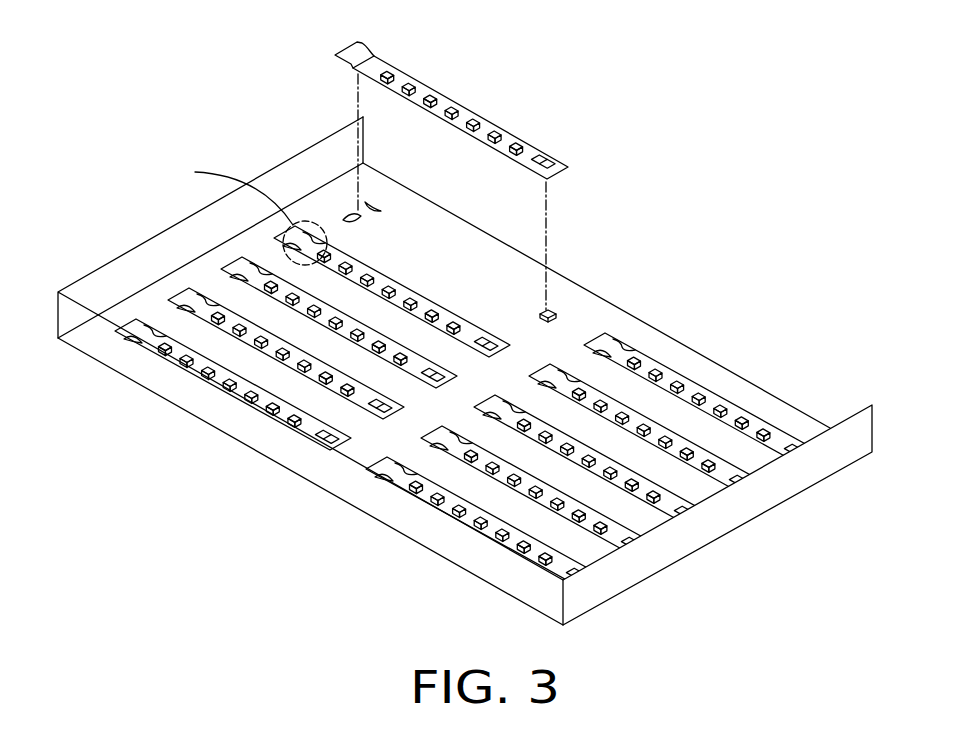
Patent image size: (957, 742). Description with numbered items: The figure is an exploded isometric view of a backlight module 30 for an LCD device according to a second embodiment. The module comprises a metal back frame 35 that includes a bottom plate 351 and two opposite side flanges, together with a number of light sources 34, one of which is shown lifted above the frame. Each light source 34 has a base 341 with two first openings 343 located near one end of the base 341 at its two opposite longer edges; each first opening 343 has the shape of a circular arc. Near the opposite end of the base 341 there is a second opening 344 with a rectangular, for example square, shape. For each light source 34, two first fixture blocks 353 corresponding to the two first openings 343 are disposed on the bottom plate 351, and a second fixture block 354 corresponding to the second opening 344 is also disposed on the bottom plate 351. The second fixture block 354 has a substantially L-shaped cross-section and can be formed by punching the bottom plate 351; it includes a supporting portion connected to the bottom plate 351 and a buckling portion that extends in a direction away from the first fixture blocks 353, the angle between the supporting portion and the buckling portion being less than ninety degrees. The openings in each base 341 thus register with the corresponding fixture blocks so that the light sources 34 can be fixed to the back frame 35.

The backlight module 30 is at (546, 50).
The light source 34 is at (490, 113).
The base 341 is at (533, 148).
The first openings 343 is at (375, 53).
The second opening 344 is at (560, 172).
The metal back frame 35 is at (680, 322).
The bottom plate 351 is at (722, 387).
The first fixture blocks 353 is at (350, 212).
The second fixture block 354 is at (552, 311).